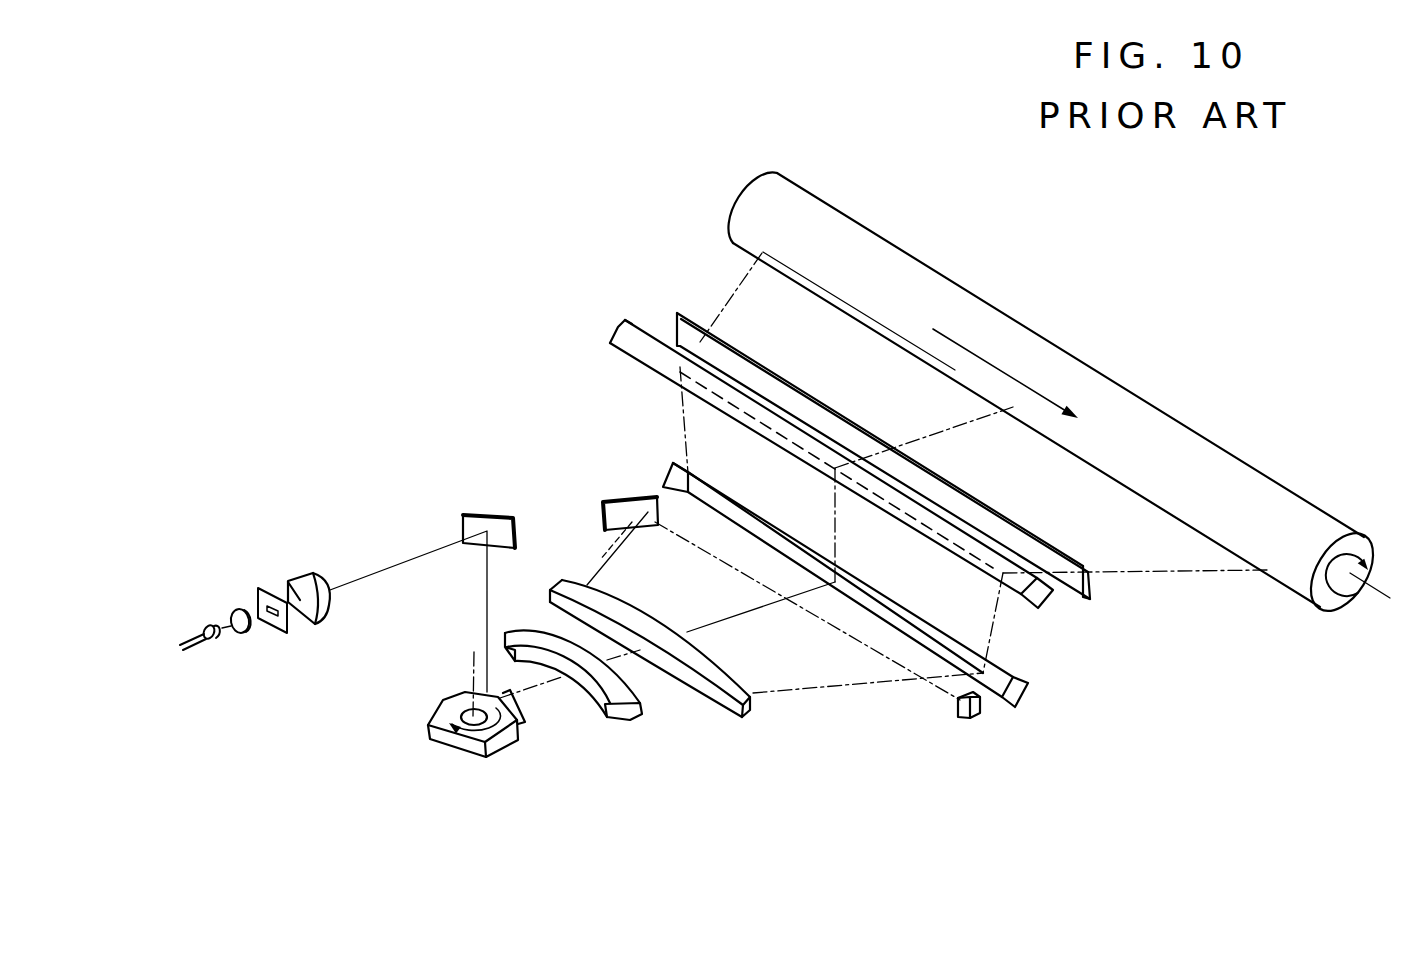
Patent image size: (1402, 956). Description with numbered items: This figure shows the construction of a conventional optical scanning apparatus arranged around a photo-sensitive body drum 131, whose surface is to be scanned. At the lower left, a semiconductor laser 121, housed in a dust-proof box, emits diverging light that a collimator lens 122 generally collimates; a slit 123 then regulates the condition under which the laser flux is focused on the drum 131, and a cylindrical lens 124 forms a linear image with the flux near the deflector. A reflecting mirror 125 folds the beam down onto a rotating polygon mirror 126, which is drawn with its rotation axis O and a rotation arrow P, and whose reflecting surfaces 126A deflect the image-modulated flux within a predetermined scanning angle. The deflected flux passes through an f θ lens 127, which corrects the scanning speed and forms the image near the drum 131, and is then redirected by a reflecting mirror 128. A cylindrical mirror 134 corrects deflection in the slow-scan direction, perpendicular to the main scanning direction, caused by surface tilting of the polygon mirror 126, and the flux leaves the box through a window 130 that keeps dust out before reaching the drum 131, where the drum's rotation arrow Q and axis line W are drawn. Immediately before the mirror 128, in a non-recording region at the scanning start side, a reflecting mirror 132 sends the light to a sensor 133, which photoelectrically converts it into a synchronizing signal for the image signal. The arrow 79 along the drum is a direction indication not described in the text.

The scanning direction arrow 79 is at (1000, 367).
The semiconductor laser 121 is at (204, 625).
The collimator lens 122 is at (236, 609).
The slit 123 is at (268, 588).
The cylindrical lens 124 is at (307, 571).
The reflecting mirror 125 is at (486, 510).
The rotating polygon mirror 126 is at (442, 695).
The reflecting surfaces 126A is at (523, 723).
The f θ lens 127 is at (545, 587).
The reflecting mirror 128 is at (1018, 707).
The window 130 is at (1090, 598).
The photo-sensitive body drum 131 is at (1299, 597).
The reflecting mirror for detecting a position of the light 132 is at (625, 496).
The sensor 133 is at (965, 720).
The cylindrical mirror 134 is at (1040, 609).
The rotation axis of polygon mirror O is at (475, 664).
The rotation direction of polygon mirror P is at (498, 756).
The rotation direction of drum Q is at (1328, 558).
The drum axis W is at (1368, 592).